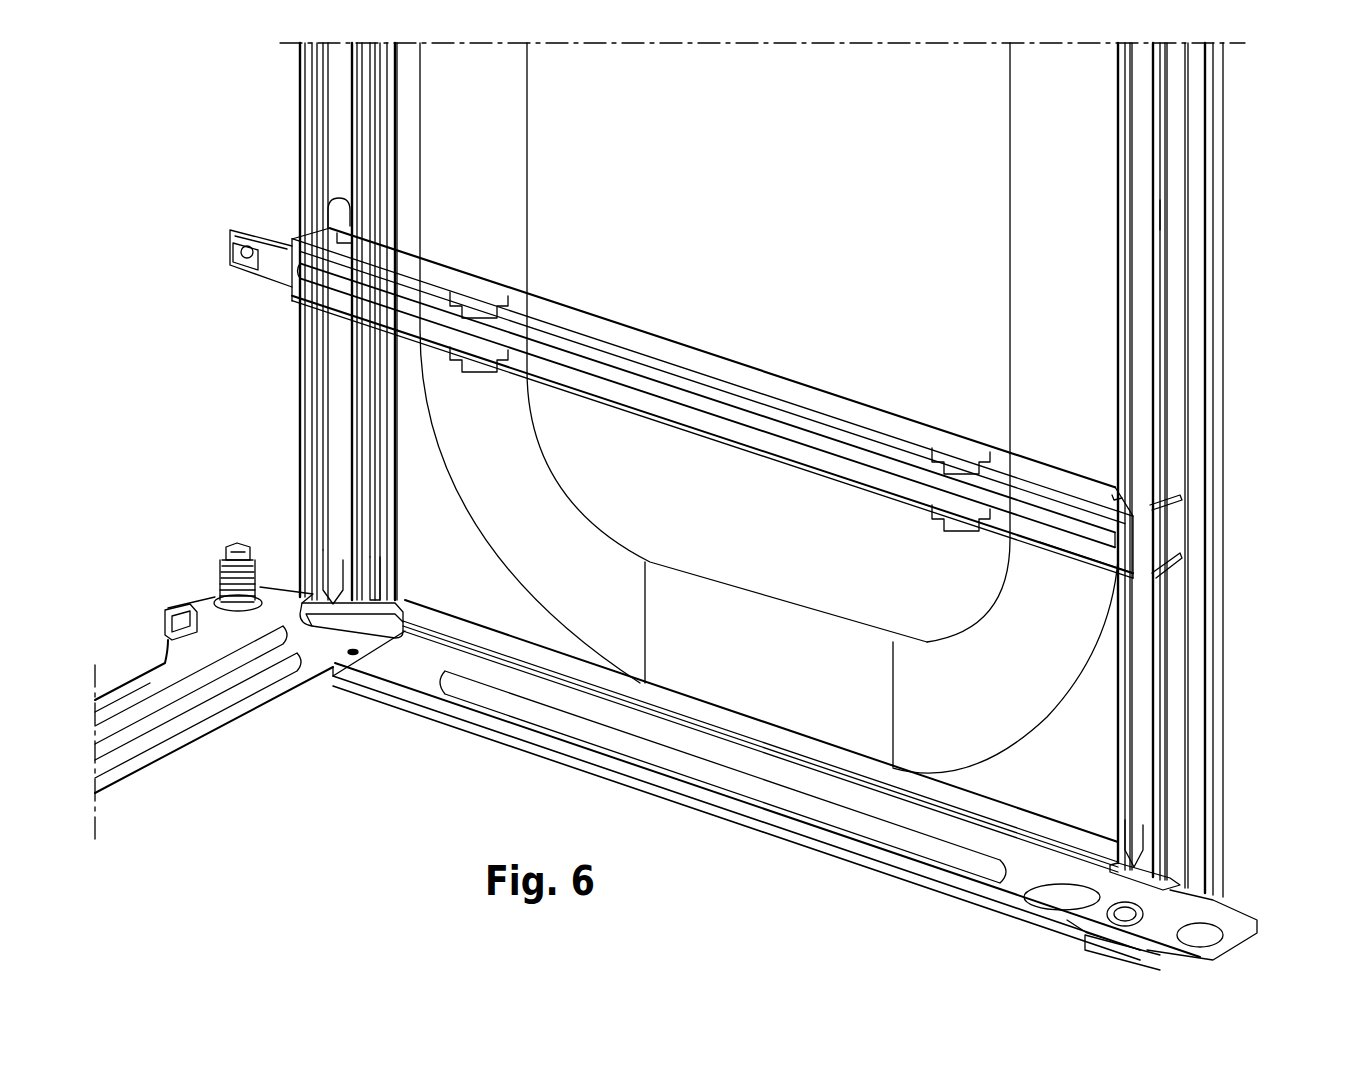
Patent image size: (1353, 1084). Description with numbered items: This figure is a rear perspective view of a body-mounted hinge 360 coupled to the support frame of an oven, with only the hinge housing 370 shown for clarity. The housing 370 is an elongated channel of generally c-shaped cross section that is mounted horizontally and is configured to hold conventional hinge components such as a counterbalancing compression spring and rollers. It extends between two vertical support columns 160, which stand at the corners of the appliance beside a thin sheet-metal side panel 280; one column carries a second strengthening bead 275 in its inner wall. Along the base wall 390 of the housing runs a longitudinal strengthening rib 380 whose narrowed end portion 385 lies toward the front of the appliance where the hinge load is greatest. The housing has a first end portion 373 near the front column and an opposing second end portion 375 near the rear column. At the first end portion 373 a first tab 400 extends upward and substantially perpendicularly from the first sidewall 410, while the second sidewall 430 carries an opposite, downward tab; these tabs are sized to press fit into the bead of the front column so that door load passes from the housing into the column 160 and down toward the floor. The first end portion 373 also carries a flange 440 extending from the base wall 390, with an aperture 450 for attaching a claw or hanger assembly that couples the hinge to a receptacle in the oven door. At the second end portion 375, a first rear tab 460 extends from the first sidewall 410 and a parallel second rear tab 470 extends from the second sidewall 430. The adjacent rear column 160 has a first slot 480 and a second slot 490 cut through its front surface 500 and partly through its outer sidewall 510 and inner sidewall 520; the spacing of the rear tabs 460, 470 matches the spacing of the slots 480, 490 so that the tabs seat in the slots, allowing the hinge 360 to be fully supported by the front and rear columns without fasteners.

The vertical support column 160 is at (296, 442).
The second bead 275 is at (380, 562).
The side panel 280 is at (806, 676).
The body-mounted hinge 360 is at (780, 356).
The hinge housing 370 is at (1058, 541).
The first end portion 373 is at (300, 317).
The second end portion 375 is at (1106, 464).
The strengthening rib 380 is at (903, 466).
The narrowed end portion 385 is at (340, 281).
The base wall 390 is at (325, 294).
The first tab 400 is at (343, 211).
The first sidewall 410 is at (617, 329).
The second sidewall 430 is at (635, 403).
The flange 440 is at (250, 238).
The aperture 450 is at (240, 252).
The first rear tab 460 is at (1153, 516).
The second rear tab 470 is at (1165, 558).
The first slot 480 is at (1179, 488).
The second slot 490 is at (1179, 563).
The front surface 500 is at (1153, 212).
The outer sidewall 510 is at (1175, 811).
The inner sidewall 520 is at (1119, 791).